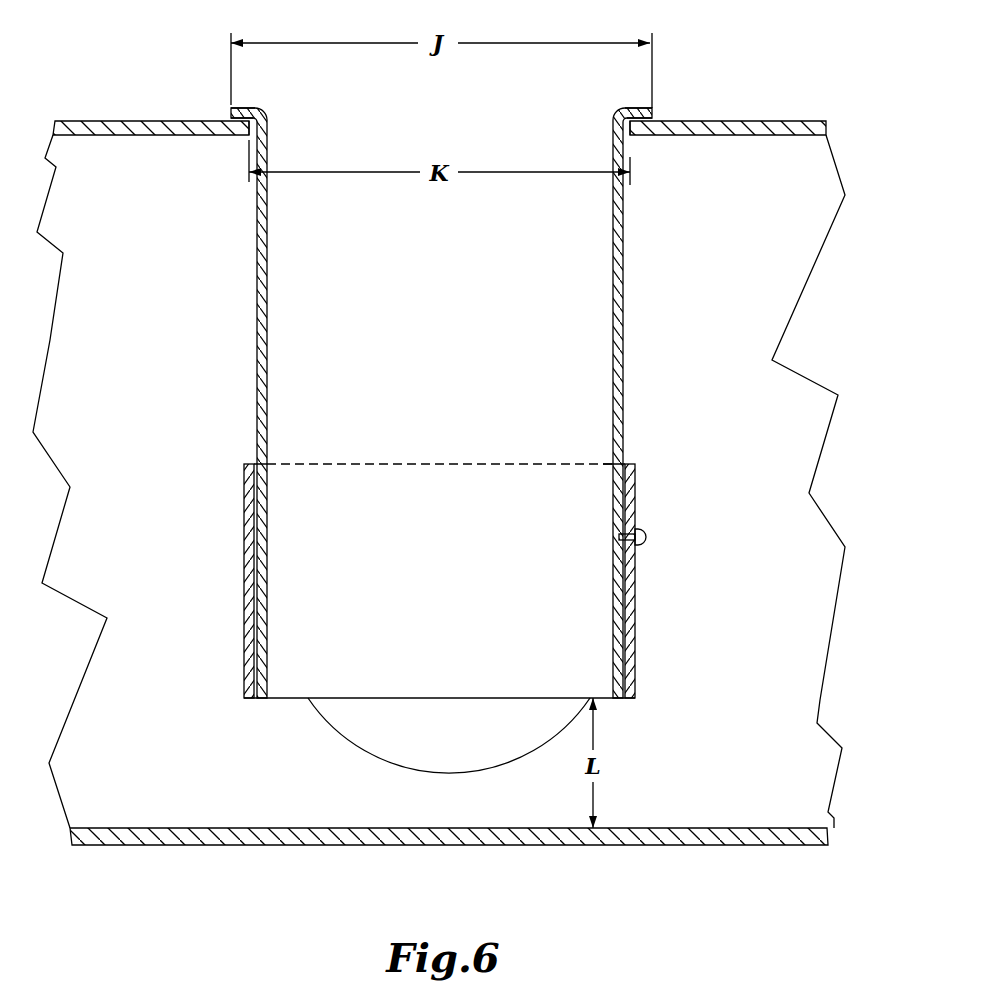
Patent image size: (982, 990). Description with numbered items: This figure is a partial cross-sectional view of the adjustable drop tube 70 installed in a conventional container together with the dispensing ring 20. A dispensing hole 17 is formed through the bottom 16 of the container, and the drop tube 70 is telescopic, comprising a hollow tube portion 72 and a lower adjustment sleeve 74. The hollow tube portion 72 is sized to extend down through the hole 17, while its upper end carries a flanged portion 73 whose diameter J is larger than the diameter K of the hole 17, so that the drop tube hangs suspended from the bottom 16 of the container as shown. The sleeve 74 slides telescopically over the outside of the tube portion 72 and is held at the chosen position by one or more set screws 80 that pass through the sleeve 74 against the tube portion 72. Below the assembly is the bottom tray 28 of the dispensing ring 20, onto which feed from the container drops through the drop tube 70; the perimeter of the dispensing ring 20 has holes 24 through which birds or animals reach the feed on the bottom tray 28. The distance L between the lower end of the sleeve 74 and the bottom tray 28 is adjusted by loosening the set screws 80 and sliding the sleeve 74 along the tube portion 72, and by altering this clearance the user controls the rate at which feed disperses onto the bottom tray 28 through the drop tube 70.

The bottom 16 is at (742, 120).
The dispensing hole 17 is at (628, 132).
The dispensing ring 20 is at (802, 637).
The holes 24 is at (456, 772).
The bottom tray 28 is at (686, 828).
The drop tube 70 is at (449, 382).
The hollow tube portion 72 is at (257, 216).
The flanged portion 73 is at (644, 109).
The lower adjustment sleeve 74 is at (245, 607).
The set screw 80 is at (647, 536).